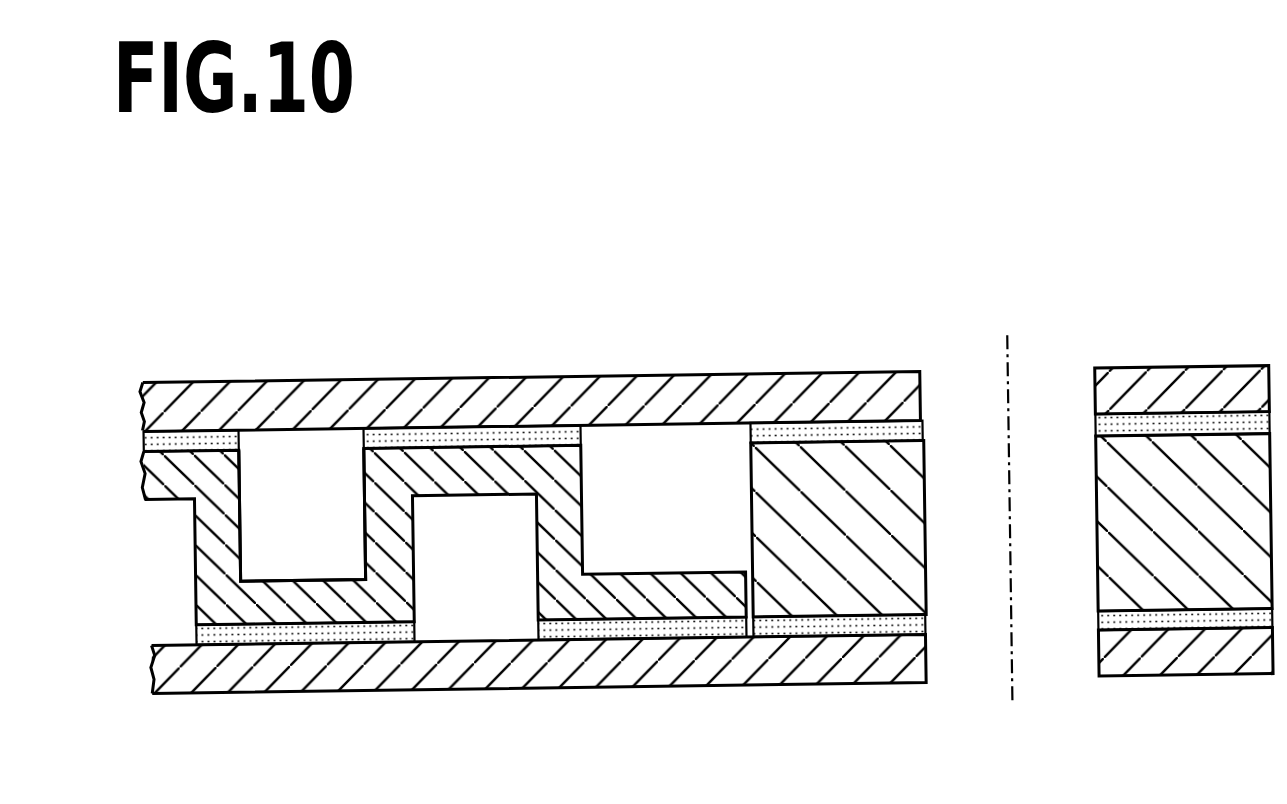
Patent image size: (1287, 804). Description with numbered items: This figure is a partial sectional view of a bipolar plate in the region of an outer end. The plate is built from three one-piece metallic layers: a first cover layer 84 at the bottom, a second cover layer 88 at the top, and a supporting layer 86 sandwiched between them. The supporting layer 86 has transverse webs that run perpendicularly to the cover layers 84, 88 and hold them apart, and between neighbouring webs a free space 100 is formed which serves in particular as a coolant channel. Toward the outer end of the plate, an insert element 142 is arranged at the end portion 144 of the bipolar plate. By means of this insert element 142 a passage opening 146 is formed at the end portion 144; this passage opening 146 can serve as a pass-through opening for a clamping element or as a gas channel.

The first cover layer 84 is at (452, 675).
The supporting layer 86 is at (567, 512).
The second cover layer 88 is at (468, 400).
The free space 100 is at (305, 468).
The insert element 142 is at (823, 578).
The end portion 144 is at (1180, 366).
The passage opening 146 is at (1098, 642).